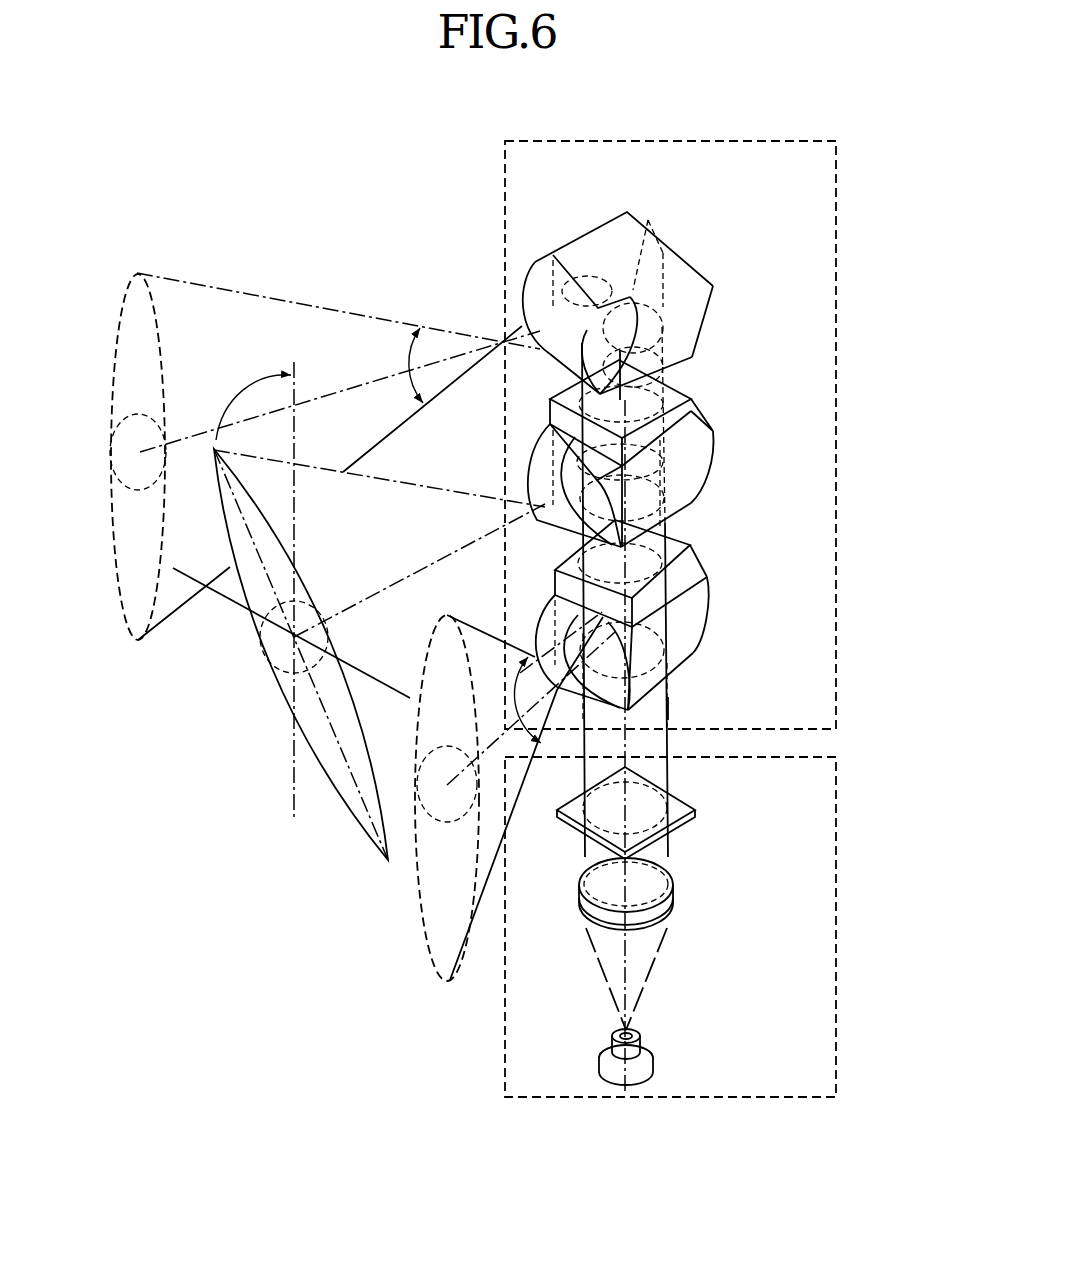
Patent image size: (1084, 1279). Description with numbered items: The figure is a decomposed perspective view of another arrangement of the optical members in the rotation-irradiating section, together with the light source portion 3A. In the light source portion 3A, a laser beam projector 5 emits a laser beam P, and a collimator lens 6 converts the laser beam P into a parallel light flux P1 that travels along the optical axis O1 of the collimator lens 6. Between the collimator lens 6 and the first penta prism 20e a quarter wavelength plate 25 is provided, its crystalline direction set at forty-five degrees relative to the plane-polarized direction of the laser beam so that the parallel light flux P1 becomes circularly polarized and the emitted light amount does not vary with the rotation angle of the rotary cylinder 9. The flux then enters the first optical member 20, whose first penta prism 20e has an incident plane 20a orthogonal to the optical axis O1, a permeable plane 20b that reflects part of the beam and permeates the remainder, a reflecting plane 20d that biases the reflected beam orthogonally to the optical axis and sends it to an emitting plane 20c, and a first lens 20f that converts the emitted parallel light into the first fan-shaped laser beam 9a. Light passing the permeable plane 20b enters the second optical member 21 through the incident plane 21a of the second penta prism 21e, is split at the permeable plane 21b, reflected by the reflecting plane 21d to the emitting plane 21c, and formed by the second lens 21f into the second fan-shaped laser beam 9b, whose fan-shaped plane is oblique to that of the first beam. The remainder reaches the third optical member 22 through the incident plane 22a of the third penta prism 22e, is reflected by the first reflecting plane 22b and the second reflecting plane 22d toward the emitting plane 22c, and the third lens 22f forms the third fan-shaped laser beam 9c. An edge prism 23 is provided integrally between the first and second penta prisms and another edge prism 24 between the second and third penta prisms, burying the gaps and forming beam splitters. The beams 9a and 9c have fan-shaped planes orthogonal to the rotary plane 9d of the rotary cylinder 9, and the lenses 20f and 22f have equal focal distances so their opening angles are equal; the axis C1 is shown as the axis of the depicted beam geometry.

The light source portion 3A is at (840, 884).
The rotary cylinder 9 is at (836, 432).
The first fan-shaped laser beam 9a is at (424, 925).
The second fan-shaped laser beam 9b is at (276, 668).
The third fan-shaped laser beam 9c is at (113, 462).
The rotary plane 9d is at (215, 597).
The laser beam projector 5 is at (653, 1058).
The collimator lens 6 is at (675, 890).
The laser beam P is at (648, 973).
The parallel light flux P1 is at (668, 697).
The optical axis O1 is at (627, 746).
The center axis C1 is at (295, 574).
The first optical member 20 is at (718, 600).
The incident plane 20a is at (687, 682).
The permeable plane 20b is at (657, 597).
The emitting plane 20c is at (600, 693).
The reflecting plane 20d is at (687, 653).
The first penta prism 20e is at (687, 613).
The first lens 20f is at (602, 690).
The second optical member 21 is at (718, 452).
The incident plane 21a is at (668, 528).
The permeable plane 21b is at (690, 405).
The emitting plane 21c is at (677, 425).
The reflecting plane 21d is at (687, 477).
The second penta prism 21e is at (677, 517).
The second lens 21f is at (546, 474).
The third optical member 22 is at (727, 282).
The incident plane 22a is at (677, 370).
The first reflecting plane 22b is at (660, 263).
The emitting plane 22c is at (630, 296).
The second reflecting plane 22d is at (707, 327).
The third penta prism 22e is at (680, 303).
The third lens 22f is at (537, 288).
The edge prism 23 is at (547, 583).
The edge prism 24 is at (568, 386).
The 1/4 wavelength plate 25 is at (678, 793).